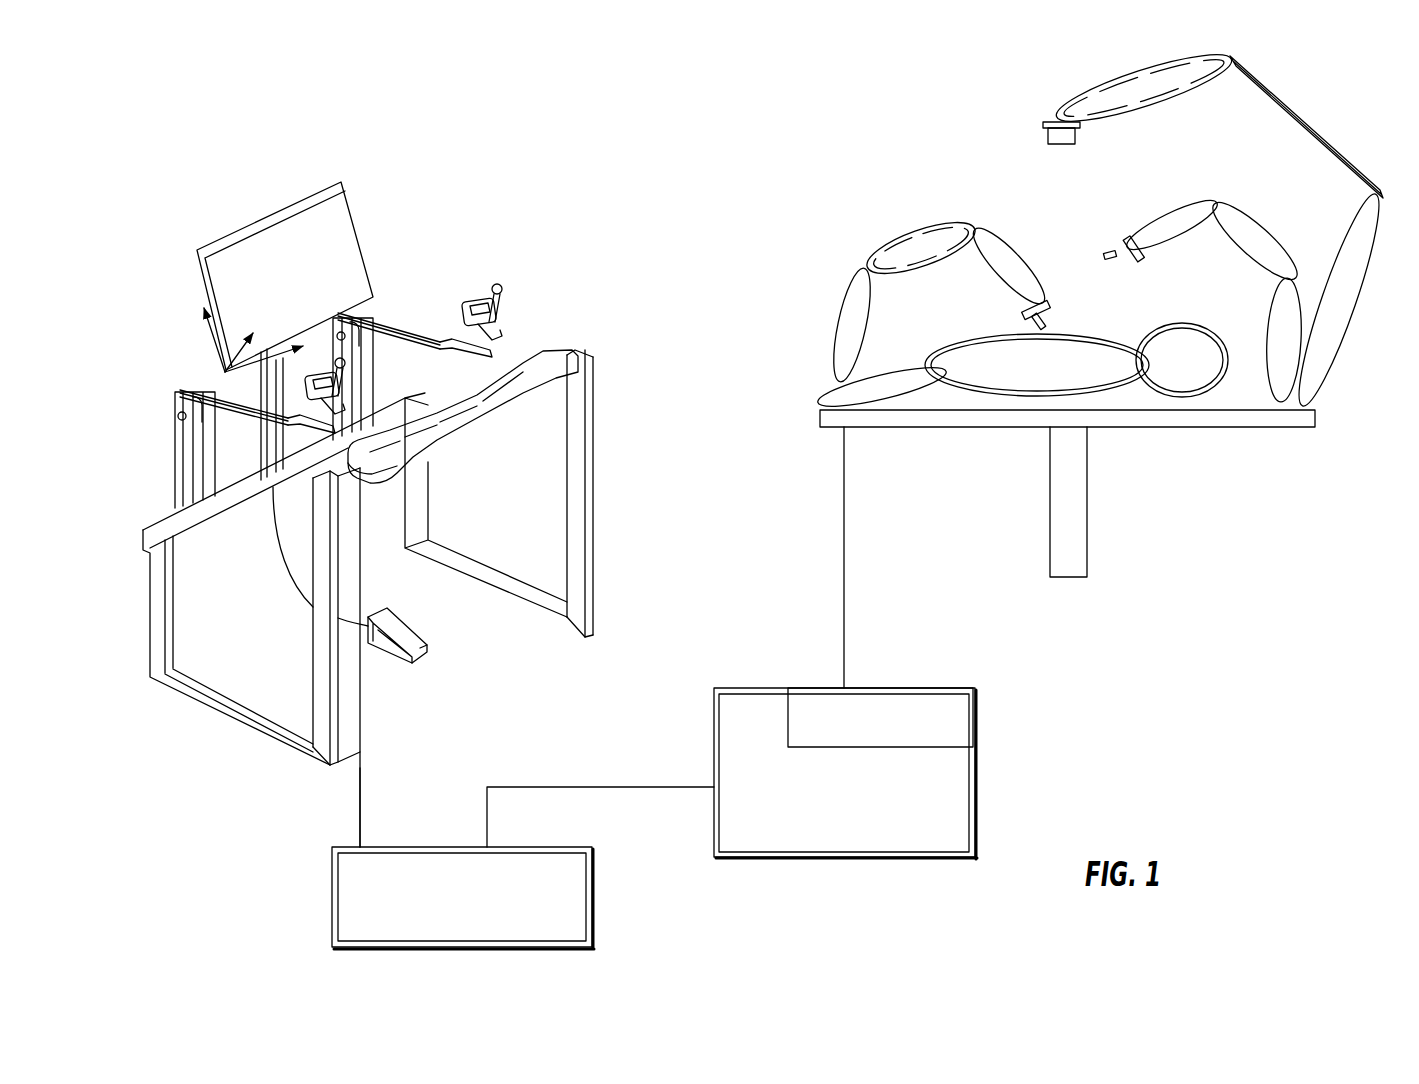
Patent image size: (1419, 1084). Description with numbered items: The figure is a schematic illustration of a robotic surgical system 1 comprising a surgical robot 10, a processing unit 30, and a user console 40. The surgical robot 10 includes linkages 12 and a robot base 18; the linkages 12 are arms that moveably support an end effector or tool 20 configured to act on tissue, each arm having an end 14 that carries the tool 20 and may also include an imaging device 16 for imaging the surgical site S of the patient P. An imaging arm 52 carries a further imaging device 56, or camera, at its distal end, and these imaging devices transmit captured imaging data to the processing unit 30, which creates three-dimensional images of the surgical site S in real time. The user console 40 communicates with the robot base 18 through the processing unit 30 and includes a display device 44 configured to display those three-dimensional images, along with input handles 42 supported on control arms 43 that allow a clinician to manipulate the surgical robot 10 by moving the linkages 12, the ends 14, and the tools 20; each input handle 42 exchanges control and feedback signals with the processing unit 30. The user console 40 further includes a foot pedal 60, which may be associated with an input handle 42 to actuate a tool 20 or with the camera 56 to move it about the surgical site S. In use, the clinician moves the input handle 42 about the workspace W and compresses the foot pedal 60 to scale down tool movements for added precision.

The robotic surgical system 1 is at (564, 130).
The surgical robot 10 is at (927, 106).
The linkages 12 is at (877, 206).
The end 14 is at (1015, 310).
The imaging device 16 is at (1033, 304).
The robot base 18 is at (856, 804).
The end effector or tool 20 is at (1050, 305).
The processing unit 30 is at (447, 912).
The user console 40 is at (207, 172).
The input handles 42 is at (503, 308).
The control arms 43 is at (397, 311).
The display device 44 is at (358, 197).
The imaging arm 52 is at (1329, 126).
The imaging device 56 is at (1044, 135).
The foot pedal 60 is at (420, 637).
The workspace W is at (503, 257).
The surgical site S is at (1087, 337).
The patient P is at (1085, 370).